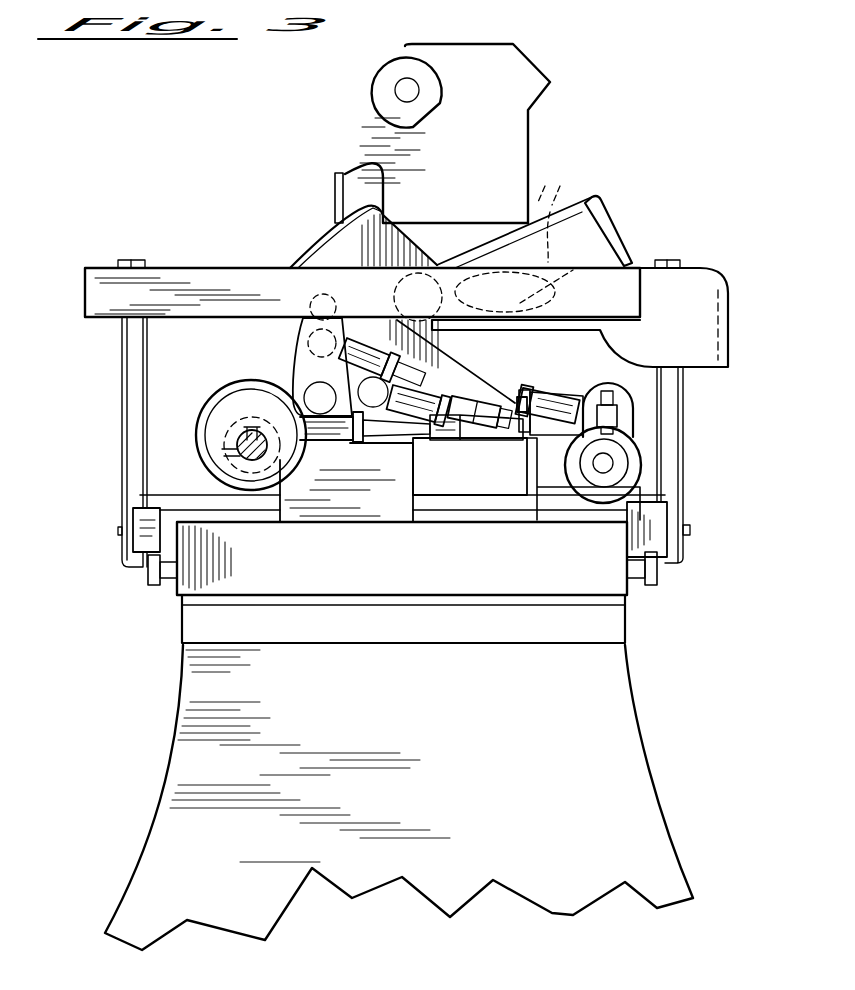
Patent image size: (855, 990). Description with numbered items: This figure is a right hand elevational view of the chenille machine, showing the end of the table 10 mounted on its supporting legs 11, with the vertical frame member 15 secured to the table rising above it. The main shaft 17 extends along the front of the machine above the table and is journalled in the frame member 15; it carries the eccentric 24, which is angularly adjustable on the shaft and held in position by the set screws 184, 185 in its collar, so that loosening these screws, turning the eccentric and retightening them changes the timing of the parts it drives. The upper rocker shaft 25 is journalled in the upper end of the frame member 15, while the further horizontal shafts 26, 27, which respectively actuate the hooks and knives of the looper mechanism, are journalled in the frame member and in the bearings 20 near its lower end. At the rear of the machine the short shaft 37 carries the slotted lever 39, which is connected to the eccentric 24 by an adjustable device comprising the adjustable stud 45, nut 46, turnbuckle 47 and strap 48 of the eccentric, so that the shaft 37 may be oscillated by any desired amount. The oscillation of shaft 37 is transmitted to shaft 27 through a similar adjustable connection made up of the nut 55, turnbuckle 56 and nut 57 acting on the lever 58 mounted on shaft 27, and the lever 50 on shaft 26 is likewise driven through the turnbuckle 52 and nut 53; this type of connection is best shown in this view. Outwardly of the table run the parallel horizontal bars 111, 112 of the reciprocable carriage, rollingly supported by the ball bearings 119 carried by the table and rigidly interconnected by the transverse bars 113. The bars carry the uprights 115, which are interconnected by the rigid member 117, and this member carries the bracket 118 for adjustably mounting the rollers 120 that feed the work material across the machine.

The table 10 is at (195, 588).
The supporting legs 11 is at (197, 720).
The vertical frame member 15 is at (513, 130).
The main shaft 17 is at (237, 440).
The bearings 20 is at (347, 512).
The eccentric 24 is at (220, 400).
The upper rocker shaft 25 is at (396, 92).
The actuating shaft for the hooks 26 is at (420, 478).
The actuating shaft for the knives 27 is at (310, 388).
The short shaft 37 is at (610, 466).
The slotted lever 39 is at (632, 382).
The adjustable stud 45 is at (618, 410).
The nut 46 is at (550, 430).
The turnbuckle 47 is at (480, 427).
The strap 48 is at (325, 447).
The lever 50 is at (420, 393).
The turnbuckle 52 is at (522, 380).
The nut 53 is at (482, 387).
The nut 55 is at (567, 390).
The turnbuckle 56 is at (493, 403).
The nut 57 is at (380, 340).
The lever 58 is at (336, 312).
The horizontal bar 111 is at (147, 539).
The horizontal bar 112 is at (660, 544).
The transverse bars 113 is at (150, 502).
The uprights 115 is at (128, 382).
The rigid member 117 is at (98, 278).
The bracket or support 118 is at (578, 212).
The ball bearings 119 is at (150, 588).
The rollers 120 is at (518, 236).
The set screw 184 is at (225, 455).
The set screw 185 is at (252, 430).